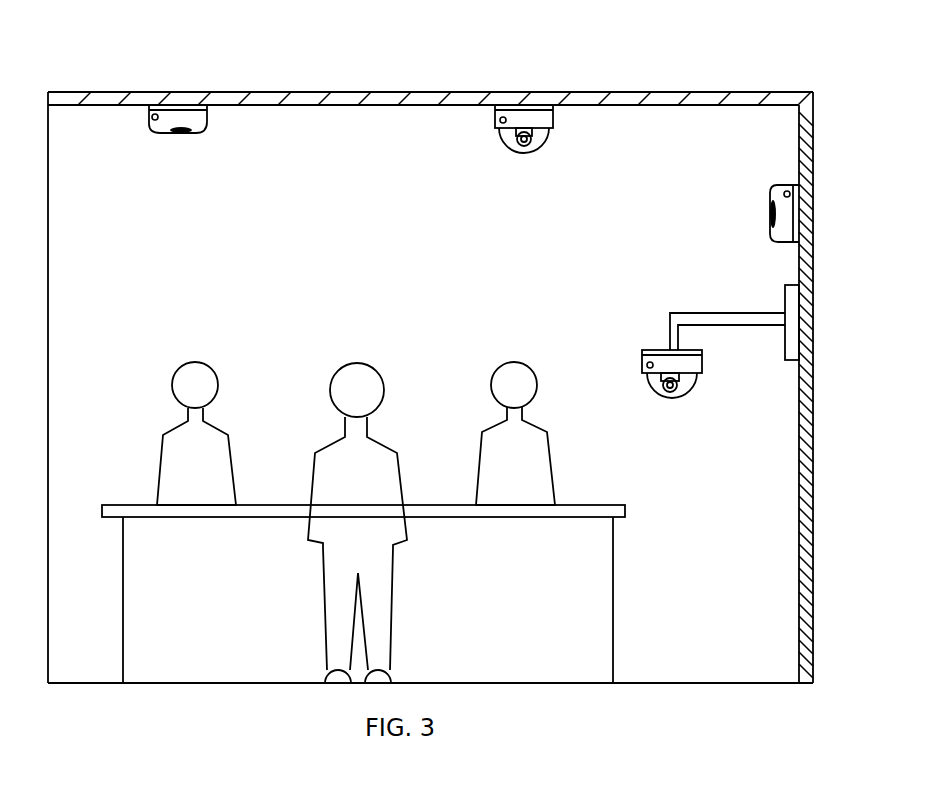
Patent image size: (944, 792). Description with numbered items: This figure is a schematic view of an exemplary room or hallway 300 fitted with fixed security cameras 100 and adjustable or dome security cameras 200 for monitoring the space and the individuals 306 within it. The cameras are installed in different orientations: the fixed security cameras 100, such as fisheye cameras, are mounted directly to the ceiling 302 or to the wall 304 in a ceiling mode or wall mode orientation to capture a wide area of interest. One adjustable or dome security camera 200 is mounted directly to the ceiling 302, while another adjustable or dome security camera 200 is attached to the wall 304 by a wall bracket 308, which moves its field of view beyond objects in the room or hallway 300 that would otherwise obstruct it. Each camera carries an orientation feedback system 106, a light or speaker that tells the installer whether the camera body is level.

The fixed security camera 100 is at (188, 152).
The orientation feedback system 106 is at (155, 121).
The adjustable or dome security camera 200 is at (528, 175).
The room or hallway 300 is at (192, 46).
The ceiling 302 is at (443, 100).
The wall 304 is at (813, 333).
The individuals 306 is at (170, 465).
The wall bracket 308 is at (722, 318).